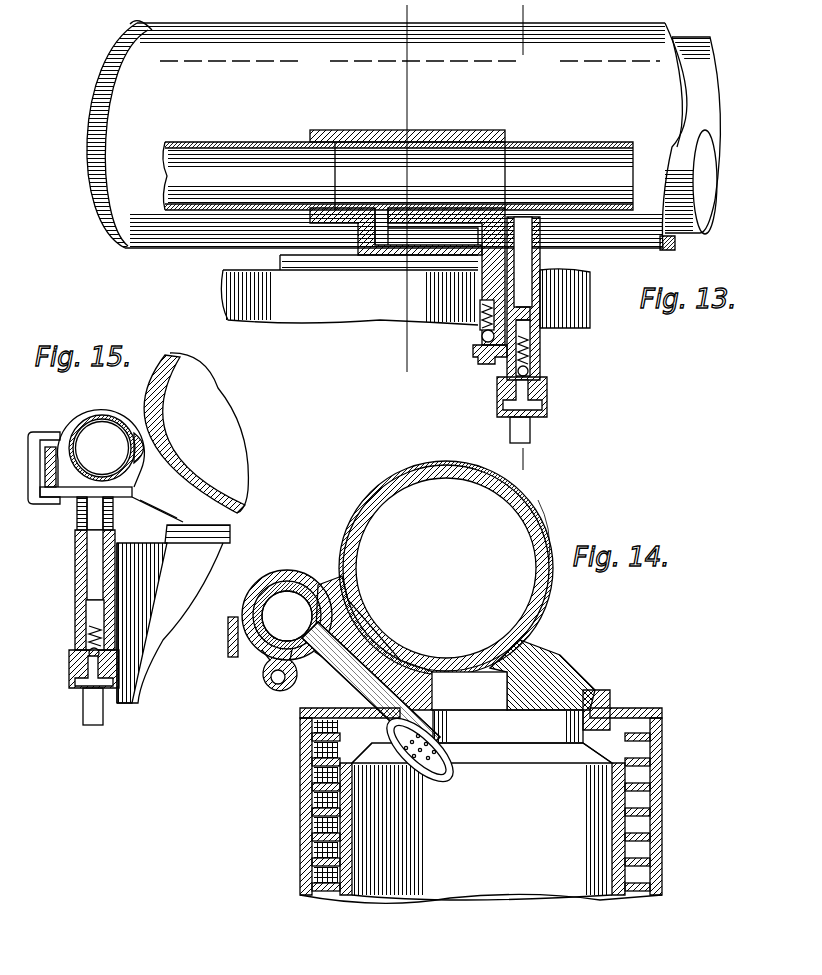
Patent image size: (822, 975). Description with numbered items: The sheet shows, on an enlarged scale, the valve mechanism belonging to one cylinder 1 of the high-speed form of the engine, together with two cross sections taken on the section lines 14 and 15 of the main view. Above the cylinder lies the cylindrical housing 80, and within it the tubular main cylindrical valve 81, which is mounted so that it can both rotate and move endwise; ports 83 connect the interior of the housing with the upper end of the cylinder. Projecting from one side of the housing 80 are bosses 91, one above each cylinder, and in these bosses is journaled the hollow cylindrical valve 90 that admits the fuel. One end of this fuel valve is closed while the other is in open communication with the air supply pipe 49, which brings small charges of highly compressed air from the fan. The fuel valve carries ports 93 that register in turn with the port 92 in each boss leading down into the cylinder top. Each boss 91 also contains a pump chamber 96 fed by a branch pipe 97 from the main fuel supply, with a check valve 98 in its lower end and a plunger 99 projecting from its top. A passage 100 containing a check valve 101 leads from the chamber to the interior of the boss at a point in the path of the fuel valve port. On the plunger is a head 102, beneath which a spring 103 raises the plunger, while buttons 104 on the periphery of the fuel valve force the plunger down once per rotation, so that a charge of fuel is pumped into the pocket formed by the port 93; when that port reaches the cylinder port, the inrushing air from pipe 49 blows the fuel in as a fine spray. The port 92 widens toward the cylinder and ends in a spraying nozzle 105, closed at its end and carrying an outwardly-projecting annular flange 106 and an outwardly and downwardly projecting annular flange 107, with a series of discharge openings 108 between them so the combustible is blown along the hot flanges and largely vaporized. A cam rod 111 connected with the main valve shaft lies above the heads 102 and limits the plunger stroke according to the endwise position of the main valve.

In FIG. 14, the cylinder 1 is at (527, 517).
In FIG. 13, the section line 14— 14 is at (409, 13).
In FIG. 13, the section line 15— 15 is at (525, 13).
In FIG. 13, the air supply pipe 49 is at (233, 142).
In FIG. 13, the cylindrical housing 80 is at (387, 134).
In FIG. 14, the cylindrical housing 80 is at (555, 592).
In FIG. 13, the cylindrical valve 81 is at (700, 125).
In FIG. 14, the ports 83 is at (450, 683).
In FIG. 13, the hollow cylindrical valve 90 is at (472, 130).
In FIG. 13, the bosses 91 is at (433, 130).
In FIG. 14, the bosses 91 is at (305, 572).
In FIG. 14, the port 92 is at (348, 653).
In FIG. 13, the ports 93 is at (383, 210).
In FIG. 14, the ports 93 is at (318, 638).
In FIG. 13, the pump chamber 96 is at (530, 345).
In FIG. 13, the branch pipe 97 is at (532, 430).
In FIG. 13, the check valve 98 is at (499, 390).
In FIG. 13, the plunger 99 is at (532, 322).
In FIG. 15, the plunger 99 is at (92, 585).
In FIG. 13, the passage 100 is at (490, 294).
In FIG. 13, the check valve 101 is at (485, 330).
In FIG. 15, the head 102 is at (67, 488).
In FIG. 15, the spring 103 is at (77, 513).
In FIG. 15, the buttons 104 is at (149, 450).
In FIG. 14, the spraying nozzle 105 is at (440, 712).
In FIG. 14, the annular flange 106 is at (458, 757).
In FIG. 14, the annular flange 107 is at (450, 740).
In FIG. 14, the discharge openings 108 is at (437, 768).
In FIG. 15, the cam rod 111 is at (52, 447).